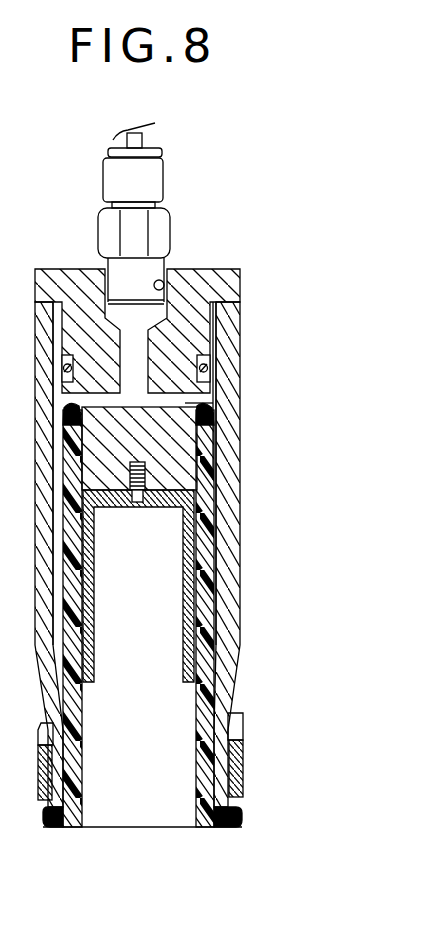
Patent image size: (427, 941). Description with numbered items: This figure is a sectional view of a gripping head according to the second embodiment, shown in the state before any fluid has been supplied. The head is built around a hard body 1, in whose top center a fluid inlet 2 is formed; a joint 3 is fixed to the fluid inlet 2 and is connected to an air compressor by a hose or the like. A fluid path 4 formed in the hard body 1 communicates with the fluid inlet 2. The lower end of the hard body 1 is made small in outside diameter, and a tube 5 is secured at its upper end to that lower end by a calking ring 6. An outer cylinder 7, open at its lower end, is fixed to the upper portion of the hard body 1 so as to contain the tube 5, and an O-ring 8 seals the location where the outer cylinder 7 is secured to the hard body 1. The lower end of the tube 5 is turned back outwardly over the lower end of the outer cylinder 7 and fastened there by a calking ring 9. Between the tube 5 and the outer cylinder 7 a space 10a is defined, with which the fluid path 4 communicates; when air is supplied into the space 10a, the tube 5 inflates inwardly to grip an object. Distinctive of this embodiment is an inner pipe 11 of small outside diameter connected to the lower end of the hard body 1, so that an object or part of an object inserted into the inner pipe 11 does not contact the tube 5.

The hard body 1 is at (225, 285).
The fluid inlet 2 is at (162, 286).
The joint 3 is at (163, 228).
The fluid path 4 is at (207, 405).
The tube 5 is at (210, 557).
The calking ring 6 is at (215, 450).
The outer cylinder 7 is at (235, 648).
The O-ring 8 is at (212, 366).
The calking ring 9 is at (243, 772).
The space 10a is at (222, 603).
The inner pipe 11 is at (200, 518).